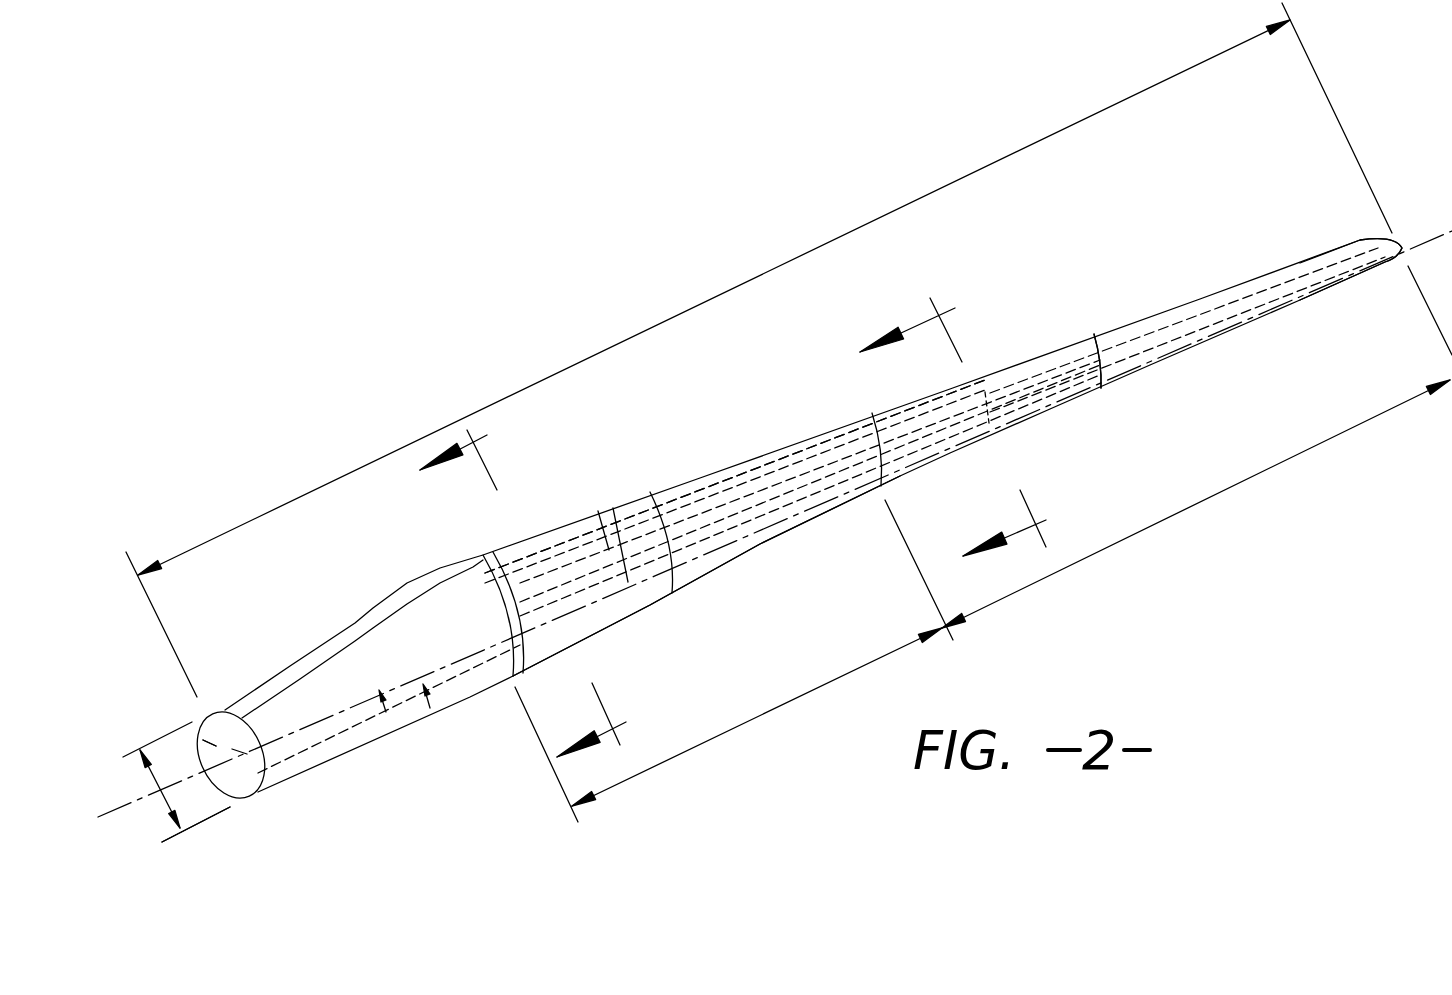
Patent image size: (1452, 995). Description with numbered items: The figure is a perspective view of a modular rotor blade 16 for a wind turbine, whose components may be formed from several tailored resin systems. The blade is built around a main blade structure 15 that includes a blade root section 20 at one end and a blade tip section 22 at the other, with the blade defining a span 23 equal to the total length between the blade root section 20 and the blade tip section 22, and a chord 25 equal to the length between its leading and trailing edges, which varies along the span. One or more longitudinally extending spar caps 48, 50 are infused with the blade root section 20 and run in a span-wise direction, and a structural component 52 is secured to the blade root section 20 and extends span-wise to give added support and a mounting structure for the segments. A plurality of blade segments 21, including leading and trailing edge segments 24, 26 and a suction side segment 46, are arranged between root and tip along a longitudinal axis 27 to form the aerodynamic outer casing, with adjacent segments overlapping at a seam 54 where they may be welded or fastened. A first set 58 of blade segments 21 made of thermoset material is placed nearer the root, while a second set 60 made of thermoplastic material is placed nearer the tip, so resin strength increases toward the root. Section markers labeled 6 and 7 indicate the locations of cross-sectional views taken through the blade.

The modular rotor blade 16 is at (420, 313).
The blade root section 20 is at (243, 695).
The blade tip section 22 is at (1257, 322).
The span 23 is at (735, 293).
The leading edge segment 24 is at (760, 550).
The blade segments 21 is at (505, 546).
The trailing edge segment 26 is at (763, 463).
The structural component 52 is at (710, 502).
The seam 54 is at (606, 511).
The suction side segment 46 is at (1043, 372).
The main blade structure 15 is at (817, 452).
The chord 25 is at (165, 788).
The longitudinal axis 27 is at (212, 836).
The spar cap 48 is at (205, 748).
The spar cap 50 is at (318, 740).
The first set of blade segments 58 is at (732, 730).
The second set of blade segments 60 is at (1163, 521).
The section line 6- 6 is at (523, 593).
The section line 7- 7 is at (947, 445).